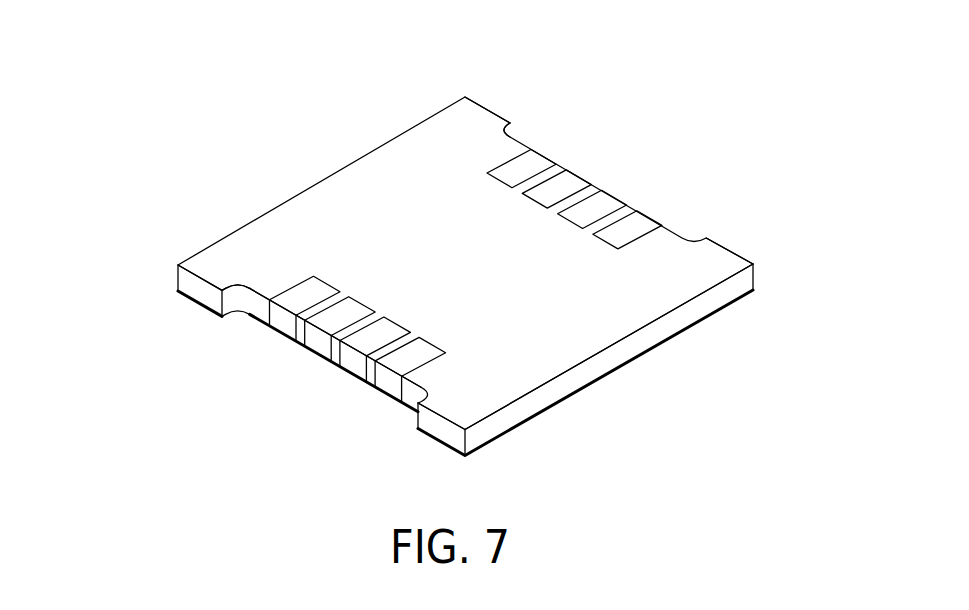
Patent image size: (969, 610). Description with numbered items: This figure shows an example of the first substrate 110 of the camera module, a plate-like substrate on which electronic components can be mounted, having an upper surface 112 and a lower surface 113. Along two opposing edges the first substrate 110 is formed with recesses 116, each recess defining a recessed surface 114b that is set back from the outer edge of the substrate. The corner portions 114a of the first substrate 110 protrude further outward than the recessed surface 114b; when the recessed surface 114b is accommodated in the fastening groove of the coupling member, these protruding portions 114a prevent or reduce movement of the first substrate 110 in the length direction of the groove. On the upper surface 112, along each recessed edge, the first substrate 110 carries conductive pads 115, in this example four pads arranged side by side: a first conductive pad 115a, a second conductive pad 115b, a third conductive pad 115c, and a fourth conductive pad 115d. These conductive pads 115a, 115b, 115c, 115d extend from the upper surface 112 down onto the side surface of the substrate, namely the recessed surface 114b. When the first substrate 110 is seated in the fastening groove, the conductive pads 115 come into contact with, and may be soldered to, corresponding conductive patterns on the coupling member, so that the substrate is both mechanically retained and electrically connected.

The first substrate 110 is at (446, 259).
The upper surface 112 is at (573, 325).
The lower surface 113 is at (525, 385).
The protruding portion 114a is at (480, 122).
The recessed surface 114b is at (252, 308).
The conductive pad 115 is at (432, 218).
The first conductive pad 115a is at (422, 350).
The second conductive pad 115b is at (385, 333).
The third conductive pad 115c is at (348, 312).
The fourth conductive pad 115d is at (299, 292).
The recess 116 is at (332, 378).